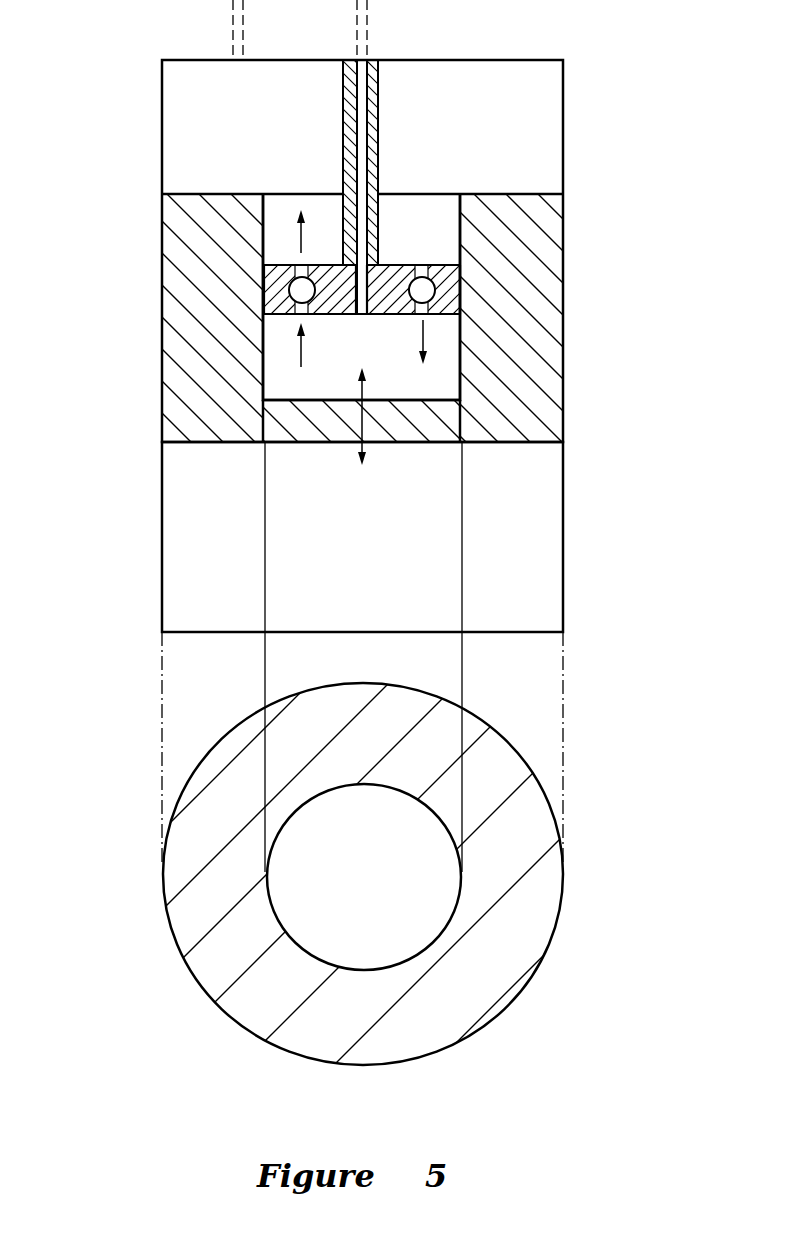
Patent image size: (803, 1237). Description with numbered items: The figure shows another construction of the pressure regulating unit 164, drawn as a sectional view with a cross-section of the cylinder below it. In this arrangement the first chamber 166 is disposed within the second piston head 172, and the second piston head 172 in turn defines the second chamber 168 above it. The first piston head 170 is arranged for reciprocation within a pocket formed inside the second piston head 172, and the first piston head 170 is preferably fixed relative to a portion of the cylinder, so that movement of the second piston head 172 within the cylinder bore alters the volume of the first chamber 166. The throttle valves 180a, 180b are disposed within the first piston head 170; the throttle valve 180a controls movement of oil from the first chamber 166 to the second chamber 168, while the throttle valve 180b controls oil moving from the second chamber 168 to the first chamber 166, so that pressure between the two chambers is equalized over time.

The pressure regulating unit 164 is at (571, 587).
The first chamber 166 is at (448, 347).
The second chamber 168 is at (175, 101).
The first piston head 170 is at (265, 307).
The second piston head 172 is at (542, 391).
The throttle valve 180a is at (297, 286).
The throttle valve 180b is at (432, 291).